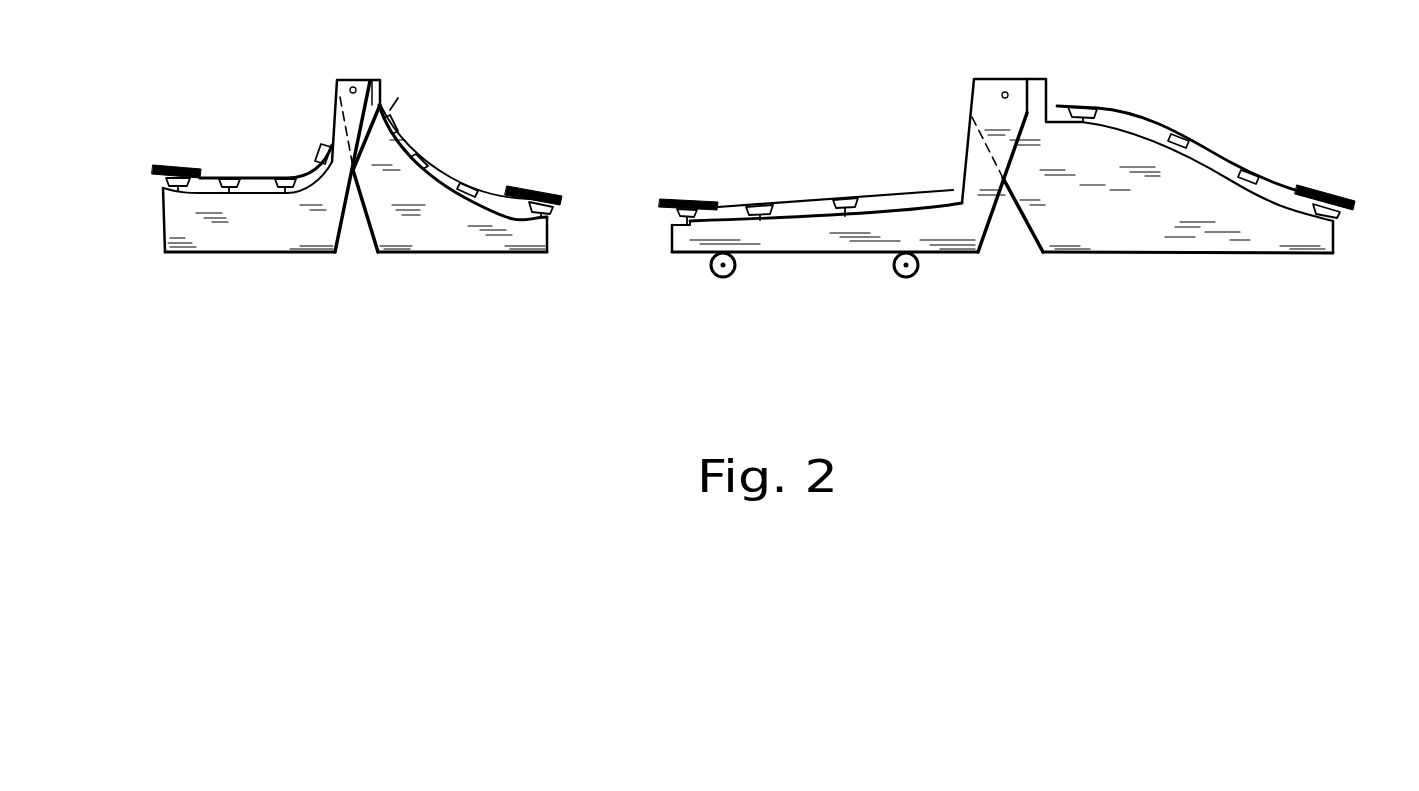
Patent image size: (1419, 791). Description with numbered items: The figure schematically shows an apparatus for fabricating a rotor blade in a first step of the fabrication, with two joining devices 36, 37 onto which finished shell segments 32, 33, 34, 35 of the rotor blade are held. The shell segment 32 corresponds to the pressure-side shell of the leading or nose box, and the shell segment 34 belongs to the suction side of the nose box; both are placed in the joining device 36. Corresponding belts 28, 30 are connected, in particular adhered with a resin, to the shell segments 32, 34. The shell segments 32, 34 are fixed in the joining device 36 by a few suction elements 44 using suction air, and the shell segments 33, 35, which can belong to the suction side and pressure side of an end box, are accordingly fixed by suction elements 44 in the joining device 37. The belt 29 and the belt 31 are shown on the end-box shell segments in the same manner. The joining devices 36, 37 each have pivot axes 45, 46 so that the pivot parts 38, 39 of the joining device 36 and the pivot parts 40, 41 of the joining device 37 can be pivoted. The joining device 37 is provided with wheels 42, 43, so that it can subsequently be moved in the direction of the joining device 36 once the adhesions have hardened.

The belt 28 is at (183, 169).
The end pad 29 is at (1310, 186).
The belt 30 is at (545, 190).
The end pad 31 is at (690, 198).
The shell segment 32 is at (245, 180).
The shell segment 33 is at (805, 205).
The shell segment 34 is at (440, 172).
The shell segment 35 is at (1210, 150).
The joining device 36 is at (389, 282).
The joining device 37 is at (1036, 285).
The pivot part 38 is at (253, 225).
The pivot part 39 is at (448, 228).
The pivot part 40 is at (855, 237).
The pivot part 41 is at (1147, 223).
The wheel 42 is at (712, 275).
The wheel 43 is at (920, 270).
The suction element 44 is at (322, 145).
The pivot axis 45 is at (350, 87).
The pivot axis 46 is at (1005, 90).